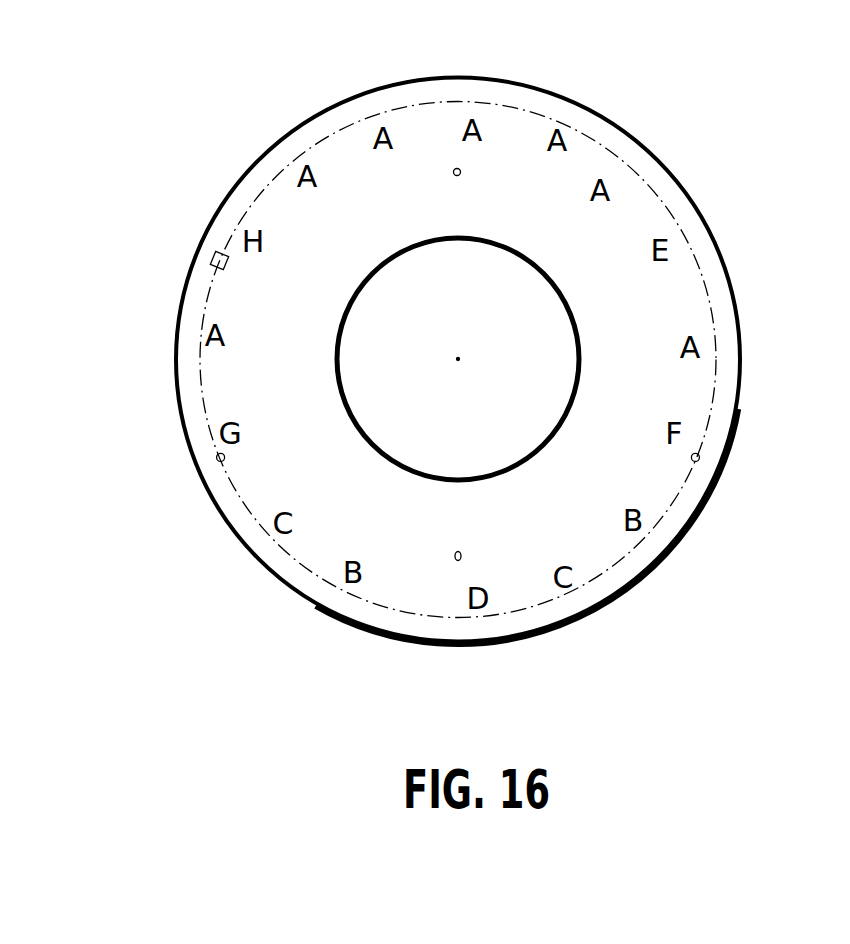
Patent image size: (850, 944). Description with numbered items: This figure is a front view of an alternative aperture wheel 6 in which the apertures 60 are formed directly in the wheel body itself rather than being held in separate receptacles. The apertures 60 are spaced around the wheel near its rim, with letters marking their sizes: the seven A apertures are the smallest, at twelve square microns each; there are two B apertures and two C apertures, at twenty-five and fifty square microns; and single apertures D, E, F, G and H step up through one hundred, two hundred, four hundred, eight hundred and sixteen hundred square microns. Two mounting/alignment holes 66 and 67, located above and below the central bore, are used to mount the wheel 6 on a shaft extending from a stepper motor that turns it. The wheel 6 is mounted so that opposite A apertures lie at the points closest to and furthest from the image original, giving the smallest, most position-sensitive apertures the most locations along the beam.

The aperture wheel 6 is at (630, 130).
The apertures 60 is at (701, 573).
The mounting/alignment hole 66 is at (455, 176).
The mounting/alignment hole 67 is at (461, 554).